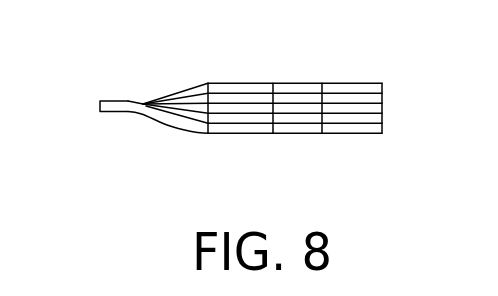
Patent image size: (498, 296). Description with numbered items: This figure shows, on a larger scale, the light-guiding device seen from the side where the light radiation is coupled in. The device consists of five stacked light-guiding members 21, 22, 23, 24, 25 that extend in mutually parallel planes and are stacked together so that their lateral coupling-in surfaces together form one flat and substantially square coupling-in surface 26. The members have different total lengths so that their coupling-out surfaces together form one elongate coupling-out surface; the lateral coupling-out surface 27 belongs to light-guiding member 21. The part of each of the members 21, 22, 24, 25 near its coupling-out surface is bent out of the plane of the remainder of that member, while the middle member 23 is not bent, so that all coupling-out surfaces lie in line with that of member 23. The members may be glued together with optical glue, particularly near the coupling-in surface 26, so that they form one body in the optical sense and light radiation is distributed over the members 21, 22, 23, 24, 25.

The light-guiding member 21 is at (166, 121).
The light-guiding member 22 is at (225, 118).
The light-guiding member 23 is at (358, 107).
The light-guiding member 24 is at (219, 97).
The light-guiding member 25 is at (248, 88).
The coupling-in surface 26 is at (297, 98).
The lateral coupling-out surface 27 is at (100, 108).